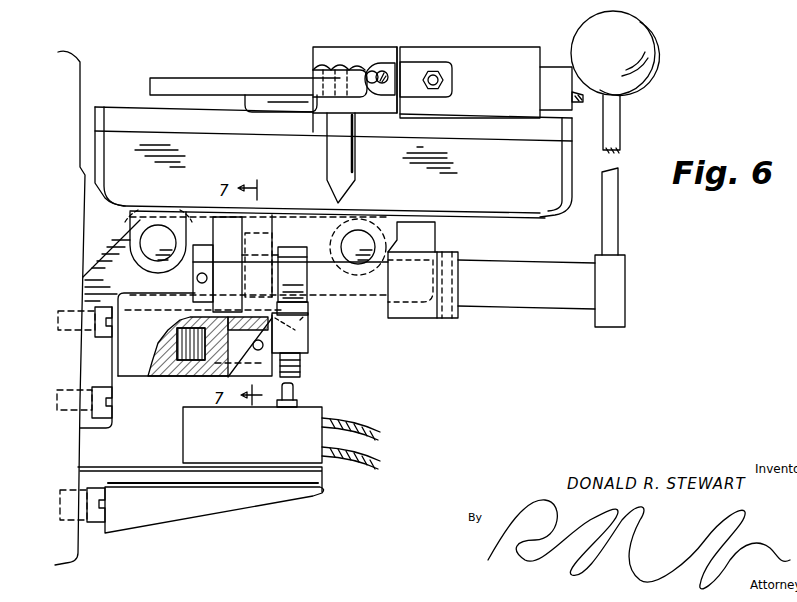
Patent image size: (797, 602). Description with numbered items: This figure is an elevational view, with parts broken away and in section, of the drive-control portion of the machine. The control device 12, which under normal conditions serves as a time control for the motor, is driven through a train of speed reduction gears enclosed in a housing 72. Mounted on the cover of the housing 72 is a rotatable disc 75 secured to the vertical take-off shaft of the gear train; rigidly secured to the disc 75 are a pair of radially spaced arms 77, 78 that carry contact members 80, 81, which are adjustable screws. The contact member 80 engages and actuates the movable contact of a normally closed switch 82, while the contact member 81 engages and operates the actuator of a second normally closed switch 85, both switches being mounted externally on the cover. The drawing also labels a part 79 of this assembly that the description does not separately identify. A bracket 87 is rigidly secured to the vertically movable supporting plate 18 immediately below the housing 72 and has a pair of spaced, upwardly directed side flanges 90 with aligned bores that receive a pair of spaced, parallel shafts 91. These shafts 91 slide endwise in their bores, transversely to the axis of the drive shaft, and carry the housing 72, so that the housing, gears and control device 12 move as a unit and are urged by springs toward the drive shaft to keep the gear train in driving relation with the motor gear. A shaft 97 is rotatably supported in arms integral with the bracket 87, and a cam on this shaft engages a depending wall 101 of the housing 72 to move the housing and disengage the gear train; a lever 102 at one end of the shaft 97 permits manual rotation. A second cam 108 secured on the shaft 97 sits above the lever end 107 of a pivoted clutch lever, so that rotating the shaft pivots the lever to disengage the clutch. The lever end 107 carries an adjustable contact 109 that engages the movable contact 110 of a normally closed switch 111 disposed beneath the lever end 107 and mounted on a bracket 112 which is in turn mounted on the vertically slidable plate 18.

The control device 12 is at (479, 36).
The vertically movable supporting plate 18 is at (80, 70).
The housing 72 is at (545, 218).
The disc 75 is at (203, 82).
The arm 77 is at (372, 63).
The arm 78 is at (418, 65).
The body 79 is at (125, 107).
The contact member 80 is at (447, 80).
The contact member 81 is at (382, 84).
The switch 82 is at (523, 50).
The switch 85 is at (358, 47).
The bracket 87 is at (112, 253).
The side flanges 90 is at (303, 227).
The shafts 91 is at (160, 233).
The shaft 97 is at (503, 309).
The depending wall 101 is at (277, 193).
The lever 102 is at (620, 222).
The lever end 107 is at (310, 338).
The cam 108 is at (295, 281).
The adjustable contact 109 is at (300, 365).
The movable contact 110 is at (298, 391).
The switch 111 is at (263, 442).
The bracket 112 is at (228, 490).